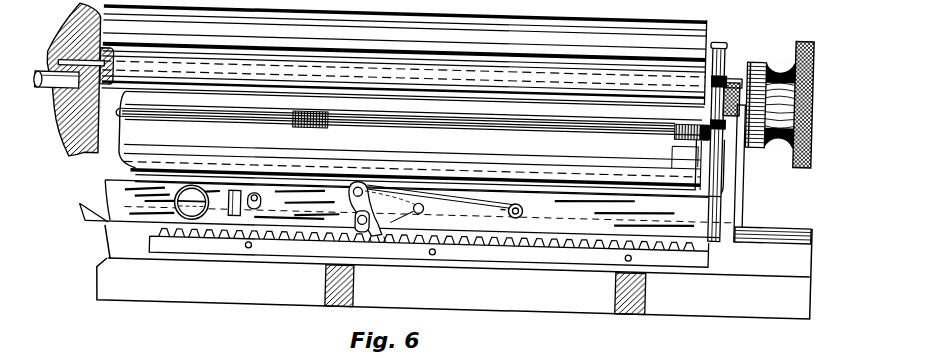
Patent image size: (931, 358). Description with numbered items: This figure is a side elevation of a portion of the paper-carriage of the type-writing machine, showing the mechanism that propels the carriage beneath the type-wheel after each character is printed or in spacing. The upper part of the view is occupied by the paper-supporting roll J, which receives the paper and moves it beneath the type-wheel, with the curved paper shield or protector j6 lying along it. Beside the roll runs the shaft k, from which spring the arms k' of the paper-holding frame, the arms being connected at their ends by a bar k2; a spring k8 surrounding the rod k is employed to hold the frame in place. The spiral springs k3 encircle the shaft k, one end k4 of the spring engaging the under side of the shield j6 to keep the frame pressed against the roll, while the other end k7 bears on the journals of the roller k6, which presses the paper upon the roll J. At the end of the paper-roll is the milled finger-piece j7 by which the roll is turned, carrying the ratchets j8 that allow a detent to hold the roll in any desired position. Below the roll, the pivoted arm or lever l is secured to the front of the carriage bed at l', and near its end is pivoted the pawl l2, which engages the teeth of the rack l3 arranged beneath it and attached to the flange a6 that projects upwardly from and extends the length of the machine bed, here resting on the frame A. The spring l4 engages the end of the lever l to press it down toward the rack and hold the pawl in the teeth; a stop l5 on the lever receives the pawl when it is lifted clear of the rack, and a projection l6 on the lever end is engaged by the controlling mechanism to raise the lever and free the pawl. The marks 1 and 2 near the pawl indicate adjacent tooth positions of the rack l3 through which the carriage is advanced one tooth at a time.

The roll J is at (404, 54).
The roller k6 is at (66, 42).
The curved paper shield or protector j6 is at (421, 144).
The shaft k is at (433, 165).
The spring k8 is at (318, 118).
The end of spiral spring k4 is at (700, 128).
The spiral springs k3 is at (709, 128).
The arms of the paper-holding frame k' is at (724, 139).
The bar k2 is at (716, 23).
The other end of the spiral spring k7 is at (712, 100).
The ratchets j8 is at (757, 43).
The milled finger-piece j7 is at (815, 55).
The pivoted arm or lever l is at (410, 208).
The pivot of the lever l' is at (183, 199).
The flange a6 is at (96, 206).
The base frame A is at (653, 276).
The stop l5 is at (368, 232).
The rack l3 is at (428, 247).
The pawl l2 is at (405, 211).
The spring l4 is at (443, 201).
The projection l6 is at (426, 208).
The tooth position 2 is at (372, 247).
The tooth position 1 is at (387, 246).